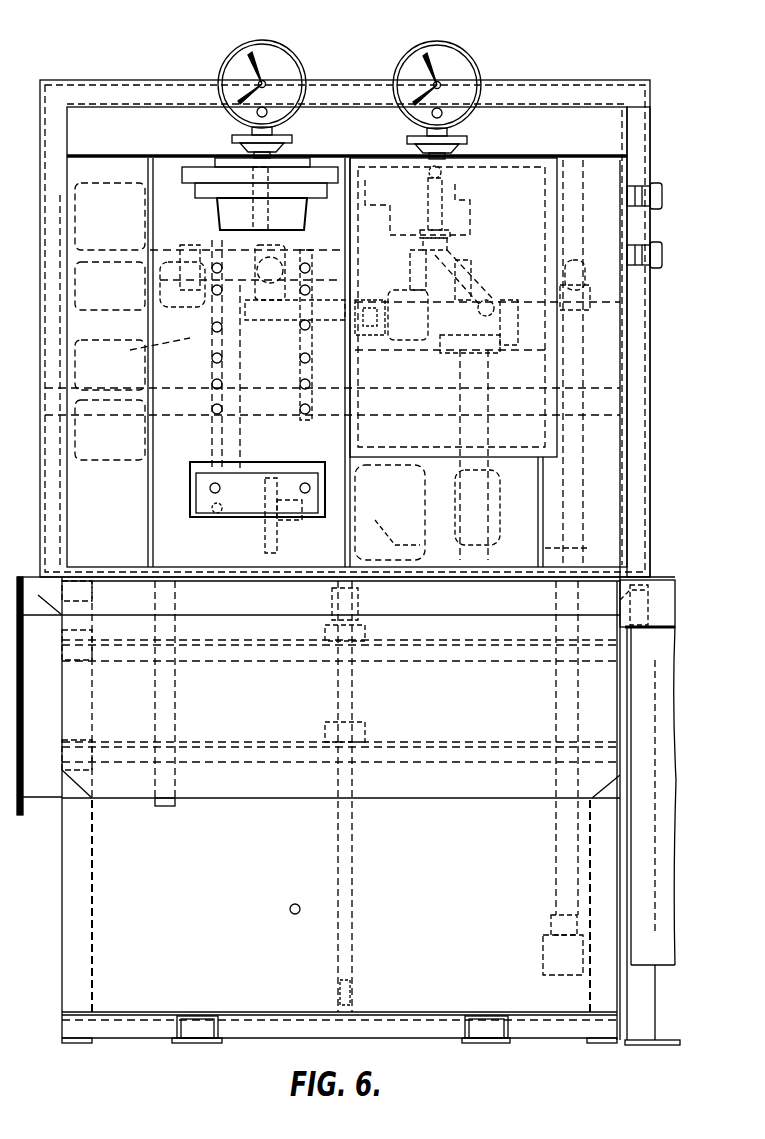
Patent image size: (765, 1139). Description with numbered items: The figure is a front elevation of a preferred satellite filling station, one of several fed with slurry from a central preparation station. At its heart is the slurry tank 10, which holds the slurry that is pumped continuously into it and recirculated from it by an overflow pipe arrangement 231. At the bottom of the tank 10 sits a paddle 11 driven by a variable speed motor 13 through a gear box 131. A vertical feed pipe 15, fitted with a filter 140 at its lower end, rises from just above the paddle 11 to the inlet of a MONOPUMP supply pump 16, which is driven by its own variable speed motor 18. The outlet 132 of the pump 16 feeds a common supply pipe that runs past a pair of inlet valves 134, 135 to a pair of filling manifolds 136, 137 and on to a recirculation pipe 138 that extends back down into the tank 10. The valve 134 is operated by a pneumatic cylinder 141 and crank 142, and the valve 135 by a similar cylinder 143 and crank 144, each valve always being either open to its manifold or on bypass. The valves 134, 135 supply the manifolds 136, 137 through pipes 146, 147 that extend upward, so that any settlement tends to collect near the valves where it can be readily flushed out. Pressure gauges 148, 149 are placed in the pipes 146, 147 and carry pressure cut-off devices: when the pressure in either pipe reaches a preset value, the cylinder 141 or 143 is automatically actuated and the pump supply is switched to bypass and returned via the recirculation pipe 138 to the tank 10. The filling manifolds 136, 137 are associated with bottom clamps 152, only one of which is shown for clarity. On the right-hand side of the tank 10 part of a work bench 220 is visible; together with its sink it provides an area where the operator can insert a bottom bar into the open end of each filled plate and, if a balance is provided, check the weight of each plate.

The slurry tank 10 is at (90, 843).
The paddle 11 is at (352, 996).
The variable speed motor 13 is at (581, 551).
The vertical feed pipe 15 is at (583, 488).
The supply pump 16 is at (570, 332).
The variable speed motor 18 is at (160, 348).
The gear box 131 is at (376, 522).
The pump outlet 132 is at (628, 283).
The inlet valve 134 is at (550, 228).
The inlet valve 135 is at (285, 262).
The filling manifold 136 is at (550, 187).
The filling manifold 137 is at (197, 193).
The recirculation pipe 138 is at (165, 692).
The filter 140 is at (545, 950).
The pneumatic cylinder 141 is at (467, 430).
The crank 142 is at (432, 286).
The pneumatic cylinder 143 is at (210, 427).
The crank 144 is at (162, 248).
The pipe 146 is at (476, 214).
The pipe 147 is at (218, 214).
The pressure gauge 148 is at (460, 62).
The pressure gauge 149 is at (281, 60).
The bottom clamp 152 is at (251, 474).
The work bench 220 is at (657, 604).
The overflow pipe arrangement 231 is at (290, 916).